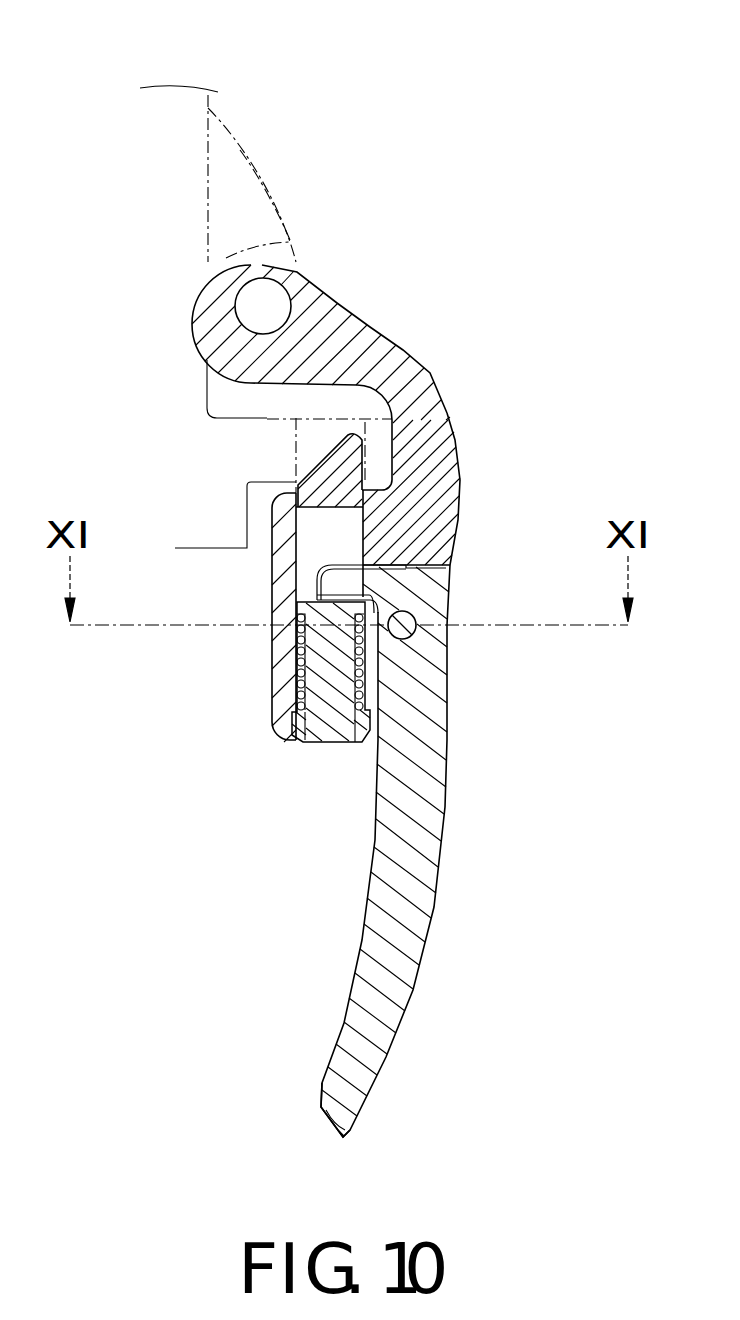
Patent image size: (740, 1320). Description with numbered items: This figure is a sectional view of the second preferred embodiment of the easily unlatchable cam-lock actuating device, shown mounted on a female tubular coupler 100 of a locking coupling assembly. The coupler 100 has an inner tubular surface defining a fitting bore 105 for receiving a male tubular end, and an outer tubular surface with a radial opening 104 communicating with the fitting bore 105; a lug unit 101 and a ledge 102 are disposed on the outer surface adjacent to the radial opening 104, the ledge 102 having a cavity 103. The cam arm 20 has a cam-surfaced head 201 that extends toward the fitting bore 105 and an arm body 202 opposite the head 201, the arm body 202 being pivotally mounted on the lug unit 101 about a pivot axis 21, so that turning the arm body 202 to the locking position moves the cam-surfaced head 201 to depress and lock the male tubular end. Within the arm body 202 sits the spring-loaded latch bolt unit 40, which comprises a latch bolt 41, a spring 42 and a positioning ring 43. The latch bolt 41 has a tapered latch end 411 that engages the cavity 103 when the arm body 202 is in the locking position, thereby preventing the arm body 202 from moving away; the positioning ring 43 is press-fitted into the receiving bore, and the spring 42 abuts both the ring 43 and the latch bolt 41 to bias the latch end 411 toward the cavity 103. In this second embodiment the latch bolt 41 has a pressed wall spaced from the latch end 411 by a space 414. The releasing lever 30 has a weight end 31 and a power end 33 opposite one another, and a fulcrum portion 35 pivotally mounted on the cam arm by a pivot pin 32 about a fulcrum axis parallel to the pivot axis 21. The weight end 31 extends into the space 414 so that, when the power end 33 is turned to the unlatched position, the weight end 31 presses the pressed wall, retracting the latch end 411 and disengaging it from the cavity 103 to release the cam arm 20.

The cam arm 20 is at (331, 415).
The pivot axis 21 is at (270, 297).
The cam-surfaced head 201 is at (205, 327).
The arm body 202 is at (460, 507).
The female tubular coupler 100 is at (226, 123).
The lug unit 101 is at (258, 167).
The radial opening 104 is at (294, 239).
The fitting bore 105 is at (157, 137).
The cavity 103 is at (440, 420).
The ledge 102 is at (382, 452).
The spring-loaded latch bolt unit 40 is at (338, 580).
The latch end 411 is at (330, 449).
The space 414 is at (303, 520).
The latch bolt 41 is at (275, 681).
The spring 42 is at (298, 688).
The positioning ring 43 is at (300, 720).
The releasing lever 30 is at (407, 856).
The weight end 31 is at (330, 580).
The pivot pin 32 is at (511, 650).
The fulcrum portion 35 is at (403, 627).
The power end 33 is at (343, 1128).